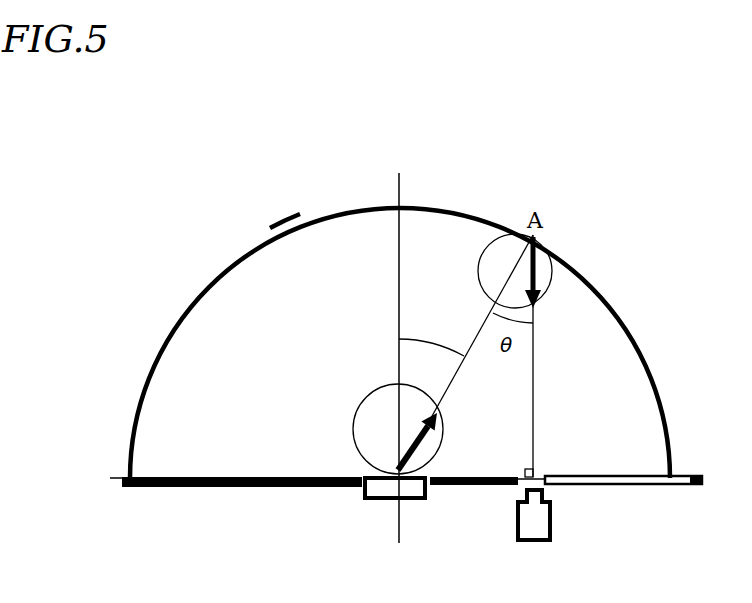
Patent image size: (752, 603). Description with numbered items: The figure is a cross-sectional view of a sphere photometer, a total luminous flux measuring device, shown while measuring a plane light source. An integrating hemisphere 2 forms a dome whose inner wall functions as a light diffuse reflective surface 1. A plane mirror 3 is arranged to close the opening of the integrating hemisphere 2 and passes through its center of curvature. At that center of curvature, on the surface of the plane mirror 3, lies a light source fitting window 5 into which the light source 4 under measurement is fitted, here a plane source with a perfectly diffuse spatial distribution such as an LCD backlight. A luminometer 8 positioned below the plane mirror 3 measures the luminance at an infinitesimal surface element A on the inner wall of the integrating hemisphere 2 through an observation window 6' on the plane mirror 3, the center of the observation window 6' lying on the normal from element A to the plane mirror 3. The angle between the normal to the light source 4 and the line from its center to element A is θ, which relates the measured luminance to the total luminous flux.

The light diffuse reflective surface 1 is at (250, 250).
The integrating hemisphere 2 is at (286, 221).
The plane mirror 3 is at (247, 487).
The light source 4 is at (395, 505).
The light source fitting window 5 is at (360, 474).
The observation window 6' is at (547, 356).
The luminometer 8 is at (552, 520).